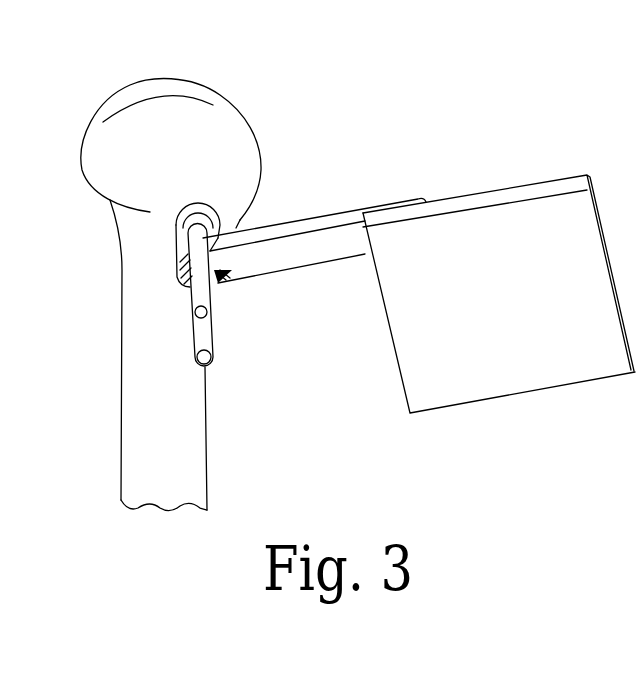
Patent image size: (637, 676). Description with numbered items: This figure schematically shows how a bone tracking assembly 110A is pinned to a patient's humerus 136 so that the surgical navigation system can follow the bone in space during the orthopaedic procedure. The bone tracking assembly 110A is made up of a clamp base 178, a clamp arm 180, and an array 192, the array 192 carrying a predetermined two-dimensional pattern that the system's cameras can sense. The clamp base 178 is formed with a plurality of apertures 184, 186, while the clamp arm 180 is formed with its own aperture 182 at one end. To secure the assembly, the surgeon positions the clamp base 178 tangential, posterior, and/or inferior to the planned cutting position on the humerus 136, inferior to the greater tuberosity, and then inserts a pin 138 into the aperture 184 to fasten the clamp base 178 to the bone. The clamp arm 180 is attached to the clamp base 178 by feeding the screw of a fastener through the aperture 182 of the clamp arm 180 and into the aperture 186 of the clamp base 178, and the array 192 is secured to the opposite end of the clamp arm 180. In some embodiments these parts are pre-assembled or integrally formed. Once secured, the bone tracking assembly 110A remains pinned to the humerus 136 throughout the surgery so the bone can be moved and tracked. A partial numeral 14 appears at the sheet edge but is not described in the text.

The bone tracking assembly 110A is at (367, 266).
The humerus 136 is at (135, 420).
The pin 138 is at (178, 300).
The clamp base 178 is at (182, 200).
The clamp arm 180 is at (291, 200).
The aperture 182 is at (230, 281).
The aperture 184 is at (232, 205).
The aperture 186 is at (160, 277).
The array 192 is at (503, 363).
The sheet fragment numeral 14 is at (624, 617).